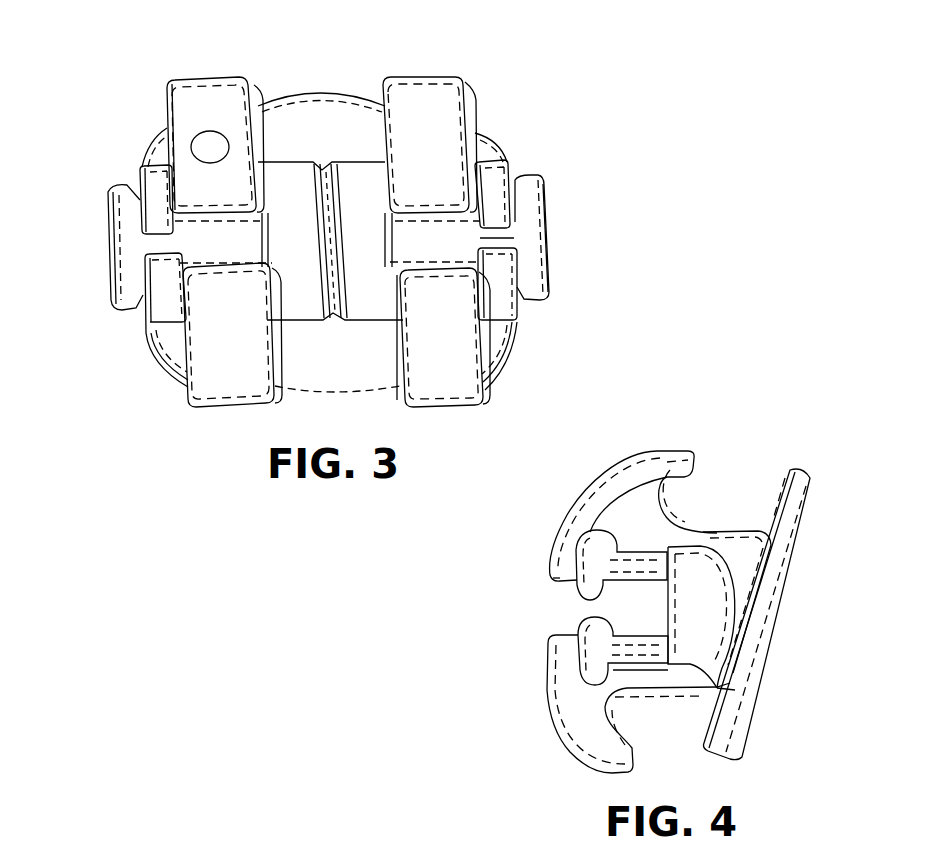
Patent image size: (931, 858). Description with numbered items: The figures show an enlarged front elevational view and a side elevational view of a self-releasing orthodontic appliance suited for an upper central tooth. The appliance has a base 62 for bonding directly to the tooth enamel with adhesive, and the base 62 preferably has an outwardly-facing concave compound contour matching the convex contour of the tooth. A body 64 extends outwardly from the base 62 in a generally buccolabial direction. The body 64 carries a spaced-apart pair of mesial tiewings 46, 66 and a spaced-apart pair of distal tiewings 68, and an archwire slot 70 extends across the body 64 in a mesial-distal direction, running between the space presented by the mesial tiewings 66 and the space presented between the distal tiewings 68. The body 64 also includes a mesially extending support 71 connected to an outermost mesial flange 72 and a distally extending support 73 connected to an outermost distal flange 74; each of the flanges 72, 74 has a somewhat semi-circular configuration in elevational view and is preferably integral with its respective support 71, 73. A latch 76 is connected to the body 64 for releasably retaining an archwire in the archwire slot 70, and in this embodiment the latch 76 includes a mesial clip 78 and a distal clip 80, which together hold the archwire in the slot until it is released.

In FIG. 3, the mesial tiewings 46 is at (602, 175).
In FIG. 4, the mesial tiewings 46 is at (483, 657).
In FIG. 4, the base 62 is at (752, 723).
In FIG. 3, the body 64 is at (288, 160).
In FIG. 4, the body 64 is at (693, 528).
In FIG. 3, the mesial tiewings 66 is at (432, 90).
In FIG. 4, the mesial tiewings 66 is at (660, 468).
In FIG. 3, the distal tiewings 68 is at (185, 97).
In FIG. 3, the archwire slot 70 is at (428, 220).
In FIG. 4, the archwire slot 70 is at (616, 636).
In FIG. 3, the mesially extending support 71 is at (492, 240).
In FIG. 3, the mesial flange 72 is at (535, 270).
In FIG. 4, the mesial flange 72 is at (712, 612).
In FIG. 3, the distally extending support 73 is at (158, 243).
In FIG. 3, the distal flange 74 is at (127, 286).
In FIG. 3, the latch 76 is at (530, 112).
In FIG. 4, the latch 76 is at (533, 601).
In FIG. 3, the mesial clip 78 is at (502, 165).
In FIG. 4, the mesial clip 78 is at (588, 550).
In FIG. 3, the distal clip 80 is at (156, 325).